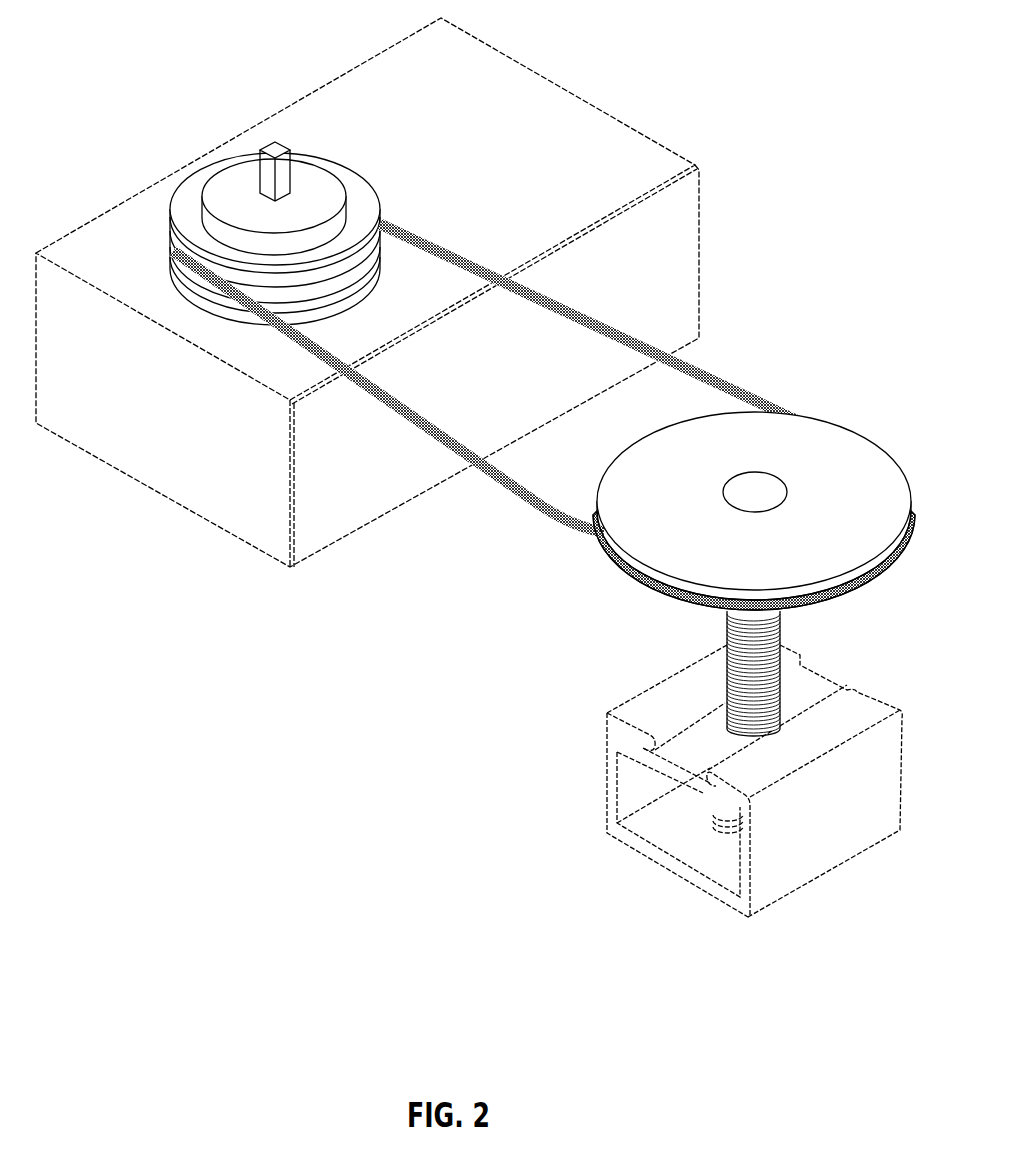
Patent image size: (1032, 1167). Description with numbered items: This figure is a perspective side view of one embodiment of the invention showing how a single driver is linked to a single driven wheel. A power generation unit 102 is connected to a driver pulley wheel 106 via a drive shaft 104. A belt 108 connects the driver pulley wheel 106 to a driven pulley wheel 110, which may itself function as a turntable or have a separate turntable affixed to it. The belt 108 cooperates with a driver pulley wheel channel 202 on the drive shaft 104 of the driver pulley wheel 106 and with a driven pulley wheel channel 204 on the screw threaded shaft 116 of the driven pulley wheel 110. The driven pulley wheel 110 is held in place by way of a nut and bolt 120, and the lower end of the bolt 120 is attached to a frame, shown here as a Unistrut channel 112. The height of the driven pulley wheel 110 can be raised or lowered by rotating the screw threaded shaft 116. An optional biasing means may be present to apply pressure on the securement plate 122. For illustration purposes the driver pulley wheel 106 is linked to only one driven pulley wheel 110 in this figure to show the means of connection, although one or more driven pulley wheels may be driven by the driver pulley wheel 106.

The power generation unit 102 is at (415, 25).
The drive shaft 104 is at (263, 146).
The driver pulley wheel 106 is at (170, 206).
The belt 108 is at (607, 326).
The driven pulley wheel 110 is at (862, 467).
The Unistrut channel 112 is at (668, 857).
The screw threaded shaft 116 is at (728, 630).
The bolt 120 is at (752, 490).
The securement plate 122 is at (633, 745).
The driver pulley wheel channel 202 is at (310, 288).
The driven pulley wheel channel 204 is at (600, 526).